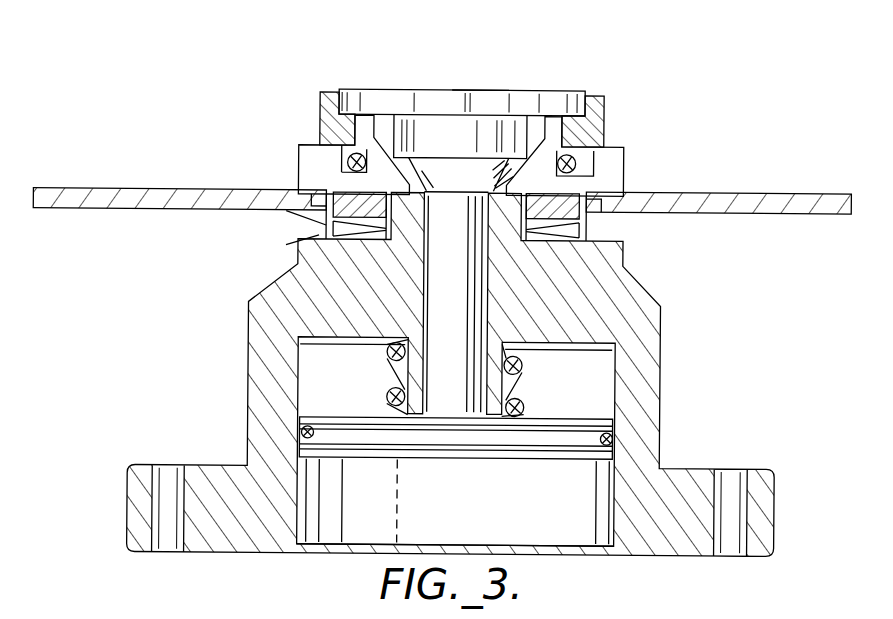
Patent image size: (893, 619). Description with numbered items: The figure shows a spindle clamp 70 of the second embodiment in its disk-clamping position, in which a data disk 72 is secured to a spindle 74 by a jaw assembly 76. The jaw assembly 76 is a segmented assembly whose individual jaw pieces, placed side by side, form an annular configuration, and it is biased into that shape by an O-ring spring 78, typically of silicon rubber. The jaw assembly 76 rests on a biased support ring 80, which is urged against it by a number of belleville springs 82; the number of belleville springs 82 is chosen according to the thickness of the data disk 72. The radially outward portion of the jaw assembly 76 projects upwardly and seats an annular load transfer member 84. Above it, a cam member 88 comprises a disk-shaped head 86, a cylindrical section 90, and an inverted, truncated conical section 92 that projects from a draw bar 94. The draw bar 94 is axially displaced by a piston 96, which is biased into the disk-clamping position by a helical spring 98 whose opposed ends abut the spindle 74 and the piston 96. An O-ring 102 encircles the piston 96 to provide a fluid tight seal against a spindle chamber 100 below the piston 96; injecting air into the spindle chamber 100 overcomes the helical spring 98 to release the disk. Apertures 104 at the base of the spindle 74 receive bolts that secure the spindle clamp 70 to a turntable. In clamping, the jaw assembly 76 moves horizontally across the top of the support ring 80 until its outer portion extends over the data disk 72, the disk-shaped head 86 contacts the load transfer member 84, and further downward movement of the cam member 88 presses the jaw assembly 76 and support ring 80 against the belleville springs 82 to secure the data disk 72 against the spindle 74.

The spindle clamp 70 is at (262, 102).
The data disk 72 is at (110, 210).
The spindle 74 is at (258, 332).
The jaw assembly 76 is at (298, 168).
The O-ring spring 78 is at (590, 162).
The support ring 80 is at (330, 212).
The belleville springs 82 is at (330, 238).
The load transfer member 84 is at (327, 94).
The disk-shaped head 86 is at (412, 97).
The cam member 88 is at (478, 72).
The cylindrical section 90 is at (406, 128).
The truncated conical section 92 is at (487, 170).
The draw bar 94 is at (487, 316).
The piston 96 is at (612, 450).
The helical spring 98 is at (525, 366).
The spindle chamber 100 is at (418, 518).
The O-ring 102 is at (303, 430).
The apertures 104 is at (172, 468).